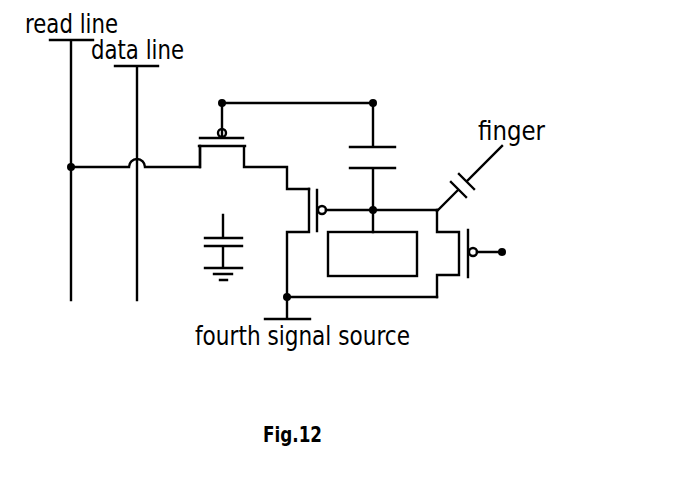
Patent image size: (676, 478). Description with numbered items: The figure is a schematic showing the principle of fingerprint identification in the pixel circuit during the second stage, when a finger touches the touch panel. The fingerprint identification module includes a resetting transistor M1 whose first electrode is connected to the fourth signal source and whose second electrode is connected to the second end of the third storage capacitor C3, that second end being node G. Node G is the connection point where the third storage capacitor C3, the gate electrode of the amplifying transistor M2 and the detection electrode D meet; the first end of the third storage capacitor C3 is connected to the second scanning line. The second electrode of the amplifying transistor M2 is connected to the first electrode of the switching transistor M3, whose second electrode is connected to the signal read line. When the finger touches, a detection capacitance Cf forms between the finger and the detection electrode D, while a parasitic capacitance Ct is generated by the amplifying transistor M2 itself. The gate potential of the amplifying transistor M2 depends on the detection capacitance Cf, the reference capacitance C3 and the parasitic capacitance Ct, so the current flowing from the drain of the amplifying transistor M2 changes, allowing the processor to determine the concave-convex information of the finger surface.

The resetting transistor M1 is at (465, 253).
The amplifying transistor M2 is at (257, 238).
The switching transistor M3 is at (254, 144).
The third storage capacitor C3 is at (387, 156).
The parasitic capacitance Ct is at (211, 247).
The detection capacitance Cf is at (471, 179).
The node G is at (403, 206).
The detection electrode D is at (372, 254).